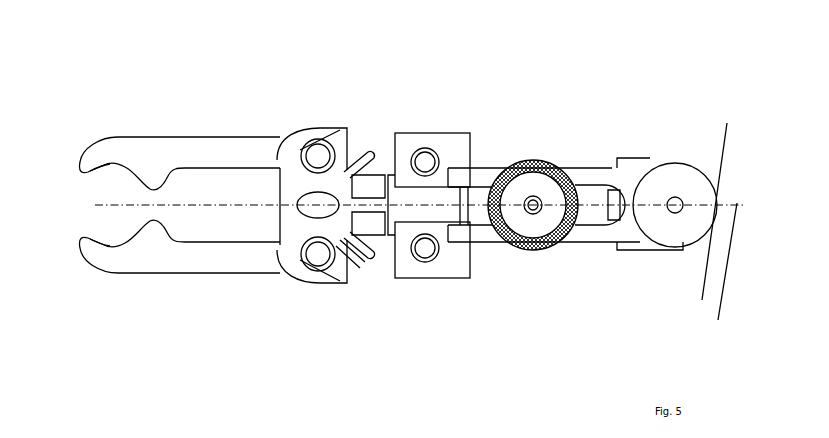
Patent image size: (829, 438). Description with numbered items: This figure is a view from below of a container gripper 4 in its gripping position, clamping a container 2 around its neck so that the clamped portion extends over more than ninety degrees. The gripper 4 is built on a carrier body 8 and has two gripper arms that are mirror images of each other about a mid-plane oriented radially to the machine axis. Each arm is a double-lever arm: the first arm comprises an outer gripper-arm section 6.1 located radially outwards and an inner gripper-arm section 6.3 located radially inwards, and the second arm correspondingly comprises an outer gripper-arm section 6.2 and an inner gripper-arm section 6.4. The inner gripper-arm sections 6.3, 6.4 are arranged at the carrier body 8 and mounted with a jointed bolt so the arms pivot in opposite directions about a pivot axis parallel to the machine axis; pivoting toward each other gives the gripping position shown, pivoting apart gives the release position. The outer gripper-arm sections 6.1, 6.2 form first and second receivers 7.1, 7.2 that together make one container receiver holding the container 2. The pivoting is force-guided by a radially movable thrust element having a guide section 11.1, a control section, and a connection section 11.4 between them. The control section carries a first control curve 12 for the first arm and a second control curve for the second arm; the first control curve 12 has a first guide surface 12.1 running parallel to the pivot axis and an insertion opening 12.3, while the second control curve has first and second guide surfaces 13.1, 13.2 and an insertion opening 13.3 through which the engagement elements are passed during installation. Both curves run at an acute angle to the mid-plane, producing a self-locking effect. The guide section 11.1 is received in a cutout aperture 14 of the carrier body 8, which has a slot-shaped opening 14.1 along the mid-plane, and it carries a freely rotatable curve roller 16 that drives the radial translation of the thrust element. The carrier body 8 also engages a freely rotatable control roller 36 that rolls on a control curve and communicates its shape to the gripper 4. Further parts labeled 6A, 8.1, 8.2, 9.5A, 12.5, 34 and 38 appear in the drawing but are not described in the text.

The container gripper 4 is at (88, 43).
The container 2 is at (80, 201).
The gripper 6A is at (54, 172).
The outer gripper-arm section 6.1 is at (118, 128).
The outer gripper-arm section 6.2 is at (183, 266).
The inner gripper-arm section 6.3 is at (454, 126).
The inner gripper-arm section 6.4 is at (456, 282).
The first receiver 7.1 is at (108, 170).
The second receiver 7.2 is at (108, 245).
The carrier body 8 is at (624, 178).
The upper arm body 8.1 is at (190, 146).
The lower arm body 8.2 is at (107, 282).
The pivot bearing 9.5A is at (425, 156).
The guide section 11.1 is at (478, 230).
The connection section 11.4 is at (368, 200).
The first control curve 12 is at (274, 130).
The first guide surface 12.1 is at (300, 198).
The insertion opening 12.3 is at (345, 135).
The upper slide 12.5 is at (357, 165).
The first guide surface 13.1 is at (333, 273).
The second guide surface 13.2 is at (314, 140).
The insertion opening 13.3 is at (350, 262).
The cutout aperture 14 is at (600, 212).
The slot-shaped opening 14.1 is at (592, 184).
The curve roller 16 is at (533, 252).
The axis 34 is at (721, 269).
The control roller 36 is at (727, 123).
The wheel 38 is at (680, 225).